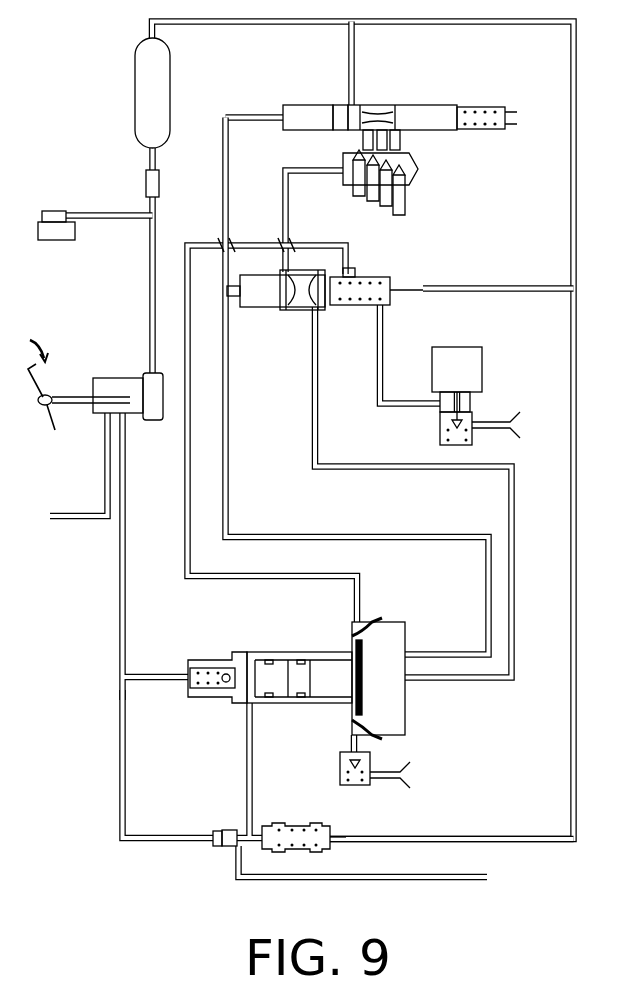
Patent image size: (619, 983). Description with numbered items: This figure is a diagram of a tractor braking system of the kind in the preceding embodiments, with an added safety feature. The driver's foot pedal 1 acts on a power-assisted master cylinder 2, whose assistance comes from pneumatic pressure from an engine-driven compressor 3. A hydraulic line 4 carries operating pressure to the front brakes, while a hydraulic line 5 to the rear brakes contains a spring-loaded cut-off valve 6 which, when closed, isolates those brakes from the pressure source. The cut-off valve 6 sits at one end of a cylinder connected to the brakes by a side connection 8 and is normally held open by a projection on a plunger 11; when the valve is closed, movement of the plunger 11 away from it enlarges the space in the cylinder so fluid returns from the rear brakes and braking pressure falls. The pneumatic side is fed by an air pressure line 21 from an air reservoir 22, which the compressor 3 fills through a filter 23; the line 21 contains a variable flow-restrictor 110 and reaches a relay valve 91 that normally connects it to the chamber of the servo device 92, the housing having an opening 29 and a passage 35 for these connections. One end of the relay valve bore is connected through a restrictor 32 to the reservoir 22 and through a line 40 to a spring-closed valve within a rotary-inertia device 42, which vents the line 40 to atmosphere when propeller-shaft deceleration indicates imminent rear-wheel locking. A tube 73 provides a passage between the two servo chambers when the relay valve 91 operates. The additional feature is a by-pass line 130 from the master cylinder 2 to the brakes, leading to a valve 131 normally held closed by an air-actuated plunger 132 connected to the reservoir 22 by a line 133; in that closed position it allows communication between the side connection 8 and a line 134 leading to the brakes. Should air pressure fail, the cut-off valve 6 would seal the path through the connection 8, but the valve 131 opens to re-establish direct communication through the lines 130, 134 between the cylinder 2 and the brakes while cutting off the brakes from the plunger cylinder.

The foot pedal 1 is at (40, 376).
The master cylinder 2 is at (150, 390).
The compressor 3 is at (73, 231).
The hydraulic line 4 is at (70, 513).
The hydraulic line 5 is at (121, 586).
The cut-off valve 6 is at (223, 668).
The side connection 8 is at (248, 737).
The plunger 11 is at (275, 672).
The air pressure line 21 is at (348, 82).
The air reservoir 22 is at (164, 66).
The filter 23 is at (159, 181).
The opening 29 is at (313, 420).
The restrictor 32 is at (421, 296).
The passage 35 is at (228, 512).
The line 40 is at (378, 355).
The device 42 is at (476, 365).
The tube 73 is at (185, 525).
The relay valve 91 is at (365, 270).
The servo device 92 is at (408, 622).
The variable flow-restrictor 110 is at (386, 103).
The by-pass line 130 is at (119, 748).
The valve 131 is at (237, 832).
The plunger 132 is at (280, 840).
The line 133 is at (435, 835).
The line 134 is at (377, 875).